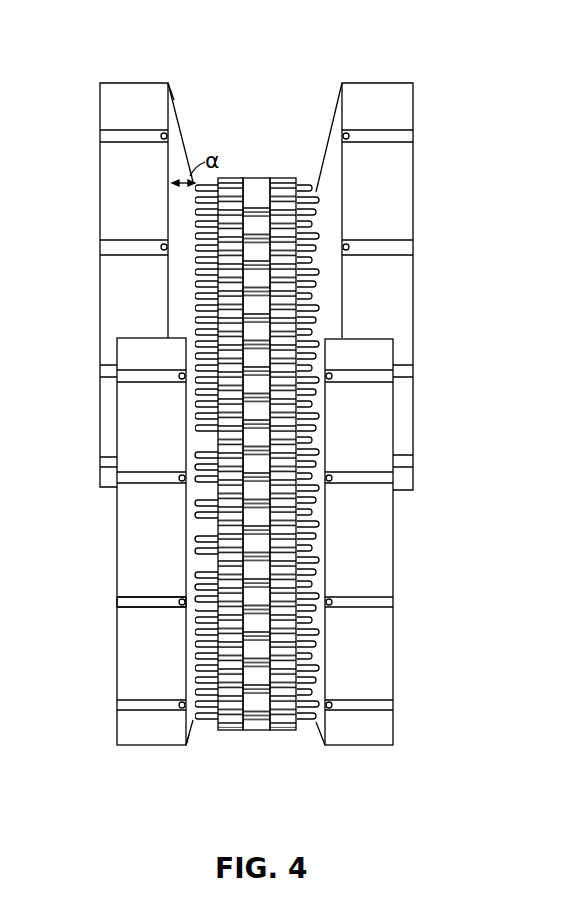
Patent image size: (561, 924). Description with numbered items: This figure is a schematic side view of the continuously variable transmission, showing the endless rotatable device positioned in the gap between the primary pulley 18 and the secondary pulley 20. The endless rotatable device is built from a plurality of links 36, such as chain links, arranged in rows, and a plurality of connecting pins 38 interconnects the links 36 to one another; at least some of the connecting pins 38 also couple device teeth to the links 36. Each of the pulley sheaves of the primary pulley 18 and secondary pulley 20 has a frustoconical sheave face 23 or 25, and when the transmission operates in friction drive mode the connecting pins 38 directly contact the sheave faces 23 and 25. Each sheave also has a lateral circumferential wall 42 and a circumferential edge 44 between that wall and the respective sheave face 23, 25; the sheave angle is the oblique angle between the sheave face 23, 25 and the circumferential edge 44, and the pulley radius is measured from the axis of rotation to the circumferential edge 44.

The primary pulley 18 is at (84, 44).
The secondary pulley 20 is at (126, 771).
The sheave face 23 is at (178, 108).
The sheave face 25 is at (185, 612).
The links 36 is at (226, 178).
The connecting pins 38 is at (195, 192).
The lateral circumferential wall 42 is at (118, 627).
The circumferential edge 44 is at (173, 95).